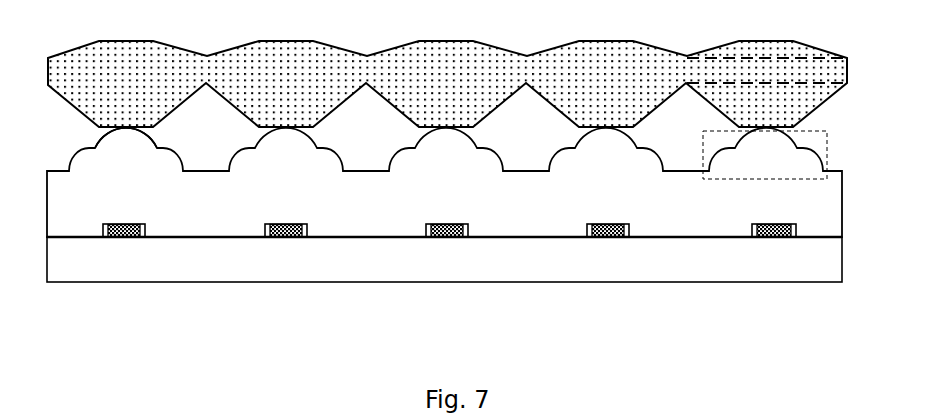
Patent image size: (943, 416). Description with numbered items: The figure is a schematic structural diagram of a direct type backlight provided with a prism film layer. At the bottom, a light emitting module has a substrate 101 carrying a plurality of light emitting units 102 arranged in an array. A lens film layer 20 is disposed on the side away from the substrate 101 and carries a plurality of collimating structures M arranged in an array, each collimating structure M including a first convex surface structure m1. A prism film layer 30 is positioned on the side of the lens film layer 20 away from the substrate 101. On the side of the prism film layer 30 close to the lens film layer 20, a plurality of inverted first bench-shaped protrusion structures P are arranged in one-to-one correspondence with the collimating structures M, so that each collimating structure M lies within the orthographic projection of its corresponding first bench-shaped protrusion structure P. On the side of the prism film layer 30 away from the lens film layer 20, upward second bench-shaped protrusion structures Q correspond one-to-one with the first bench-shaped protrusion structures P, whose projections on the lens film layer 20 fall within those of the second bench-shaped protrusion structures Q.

The substrate 101 is at (852, 267).
The light emitting units 102 is at (490, 270).
The lens film layer 20 is at (852, 203).
The prism film layer 30 is at (858, 72).
The first convex surface structure m1 is at (90, 134).
The second bench-shaped protrusion structure Q is at (790, 46).
The first bench-shaped protrusion structure P is at (807, 107).
The collimating structure M is at (840, 155).